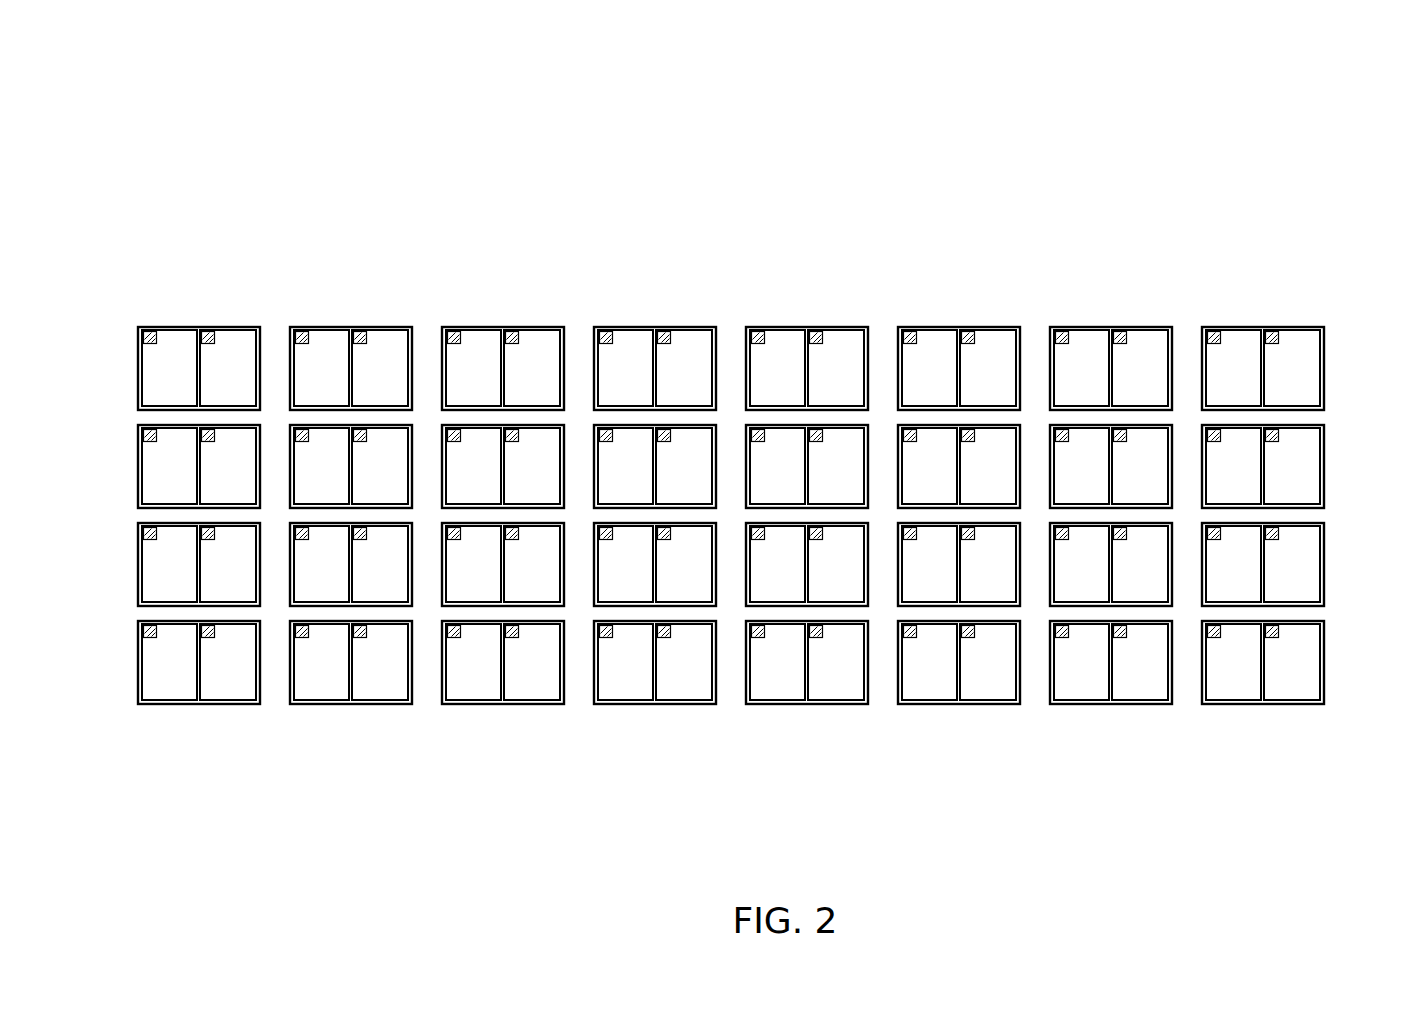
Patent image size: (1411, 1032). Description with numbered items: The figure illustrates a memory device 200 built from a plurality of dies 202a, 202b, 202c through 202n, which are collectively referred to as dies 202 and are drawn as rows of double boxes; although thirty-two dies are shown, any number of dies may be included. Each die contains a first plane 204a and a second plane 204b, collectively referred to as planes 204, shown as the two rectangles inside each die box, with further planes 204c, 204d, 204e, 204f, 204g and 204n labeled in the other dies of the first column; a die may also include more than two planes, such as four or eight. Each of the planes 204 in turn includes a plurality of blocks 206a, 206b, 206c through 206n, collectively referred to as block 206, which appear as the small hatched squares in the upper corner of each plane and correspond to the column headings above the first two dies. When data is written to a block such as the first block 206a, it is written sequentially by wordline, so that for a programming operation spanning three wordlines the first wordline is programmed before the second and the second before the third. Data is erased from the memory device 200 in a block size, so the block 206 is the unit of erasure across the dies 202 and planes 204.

The memory device 200 is at (160, 53).
The dies 202 is at (455, 327).
The die 202a is at (137, 370).
The die 202b is at (137, 468).
The die 202c is at (137, 566).
The die 202n is at (137, 664).
The planes 204 is at (305, 385).
The first plane 204a is at (193, 395).
The second plane 204b is at (205, 395).
The plane 204c is at (193, 493).
The plane 204d is at (205, 493).
The plane 204e is at (193, 591).
The plane 204f is at (205, 591).
The plane 204g is at (193, 689).
The plane 204n is at (205, 689).
The block 206 is at (513, 330).
The first block 206a is at (150, 330).
The block 206b is at (207, 330).
The block 206c is at (302, 330).
The block 206n is at (360, 330).